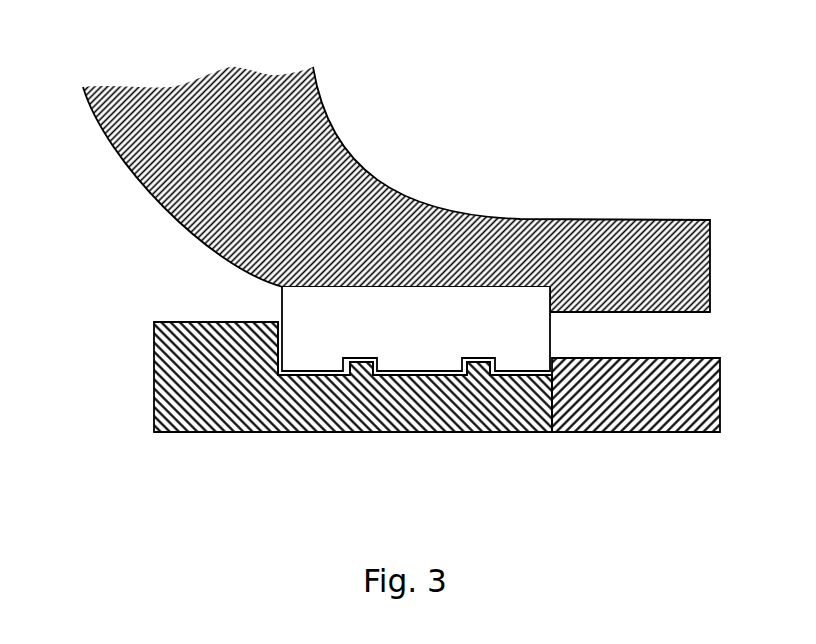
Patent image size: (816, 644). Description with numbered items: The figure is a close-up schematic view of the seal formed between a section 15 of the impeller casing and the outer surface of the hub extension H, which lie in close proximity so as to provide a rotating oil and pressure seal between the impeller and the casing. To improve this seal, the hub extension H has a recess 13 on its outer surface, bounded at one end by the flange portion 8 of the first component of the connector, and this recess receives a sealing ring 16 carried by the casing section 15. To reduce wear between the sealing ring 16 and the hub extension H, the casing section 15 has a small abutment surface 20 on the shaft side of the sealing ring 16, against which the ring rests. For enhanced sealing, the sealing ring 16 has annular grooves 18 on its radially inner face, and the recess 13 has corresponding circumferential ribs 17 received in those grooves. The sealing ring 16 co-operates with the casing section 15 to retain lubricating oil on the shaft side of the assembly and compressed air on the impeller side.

The flange portion 8 is at (655, 395).
The recess 13 is at (280, 350).
The casing section 15 is at (158, 150).
The sealing ring 16 is at (410, 312).
The circumferential ribs 17 is at (358, 362).
The annular grooves 18 is at (483, 360).
The abutment surface 20 is at (560, 296).
The hub extension H is at (192, 388).